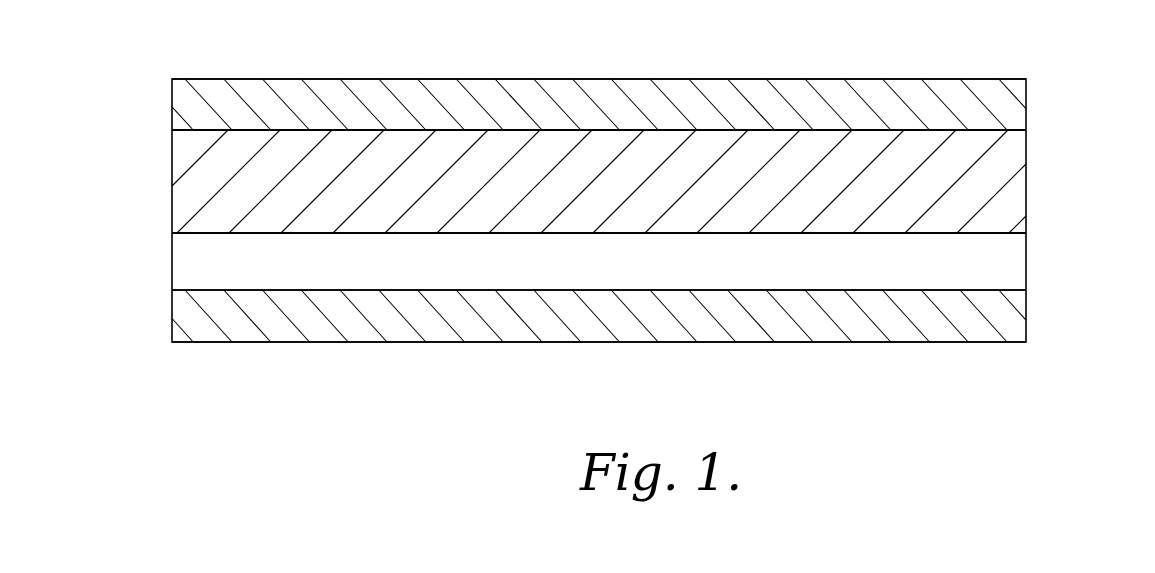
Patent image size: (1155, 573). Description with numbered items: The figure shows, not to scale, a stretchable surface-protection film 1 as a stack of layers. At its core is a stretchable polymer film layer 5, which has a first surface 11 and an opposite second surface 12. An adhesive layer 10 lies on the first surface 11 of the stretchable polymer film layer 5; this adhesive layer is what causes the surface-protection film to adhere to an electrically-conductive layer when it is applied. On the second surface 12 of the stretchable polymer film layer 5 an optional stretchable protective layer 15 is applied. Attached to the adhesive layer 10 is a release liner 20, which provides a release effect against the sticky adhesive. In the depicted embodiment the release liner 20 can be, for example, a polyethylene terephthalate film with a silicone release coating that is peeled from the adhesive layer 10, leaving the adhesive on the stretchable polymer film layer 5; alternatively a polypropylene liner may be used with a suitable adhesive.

The surface-protection film 1 is at (85, 24).
The stretchable protective layer 15 is at (1026, 89).
The second surface 12 is at (1027, 128).
The stretchable polymer film layer 5 is at (1018, 182).
The first surface 11 is at (1026, 232).
The adhesive layer 10 is at (1007, 255).
The release liner 20 is at (1027, 320).